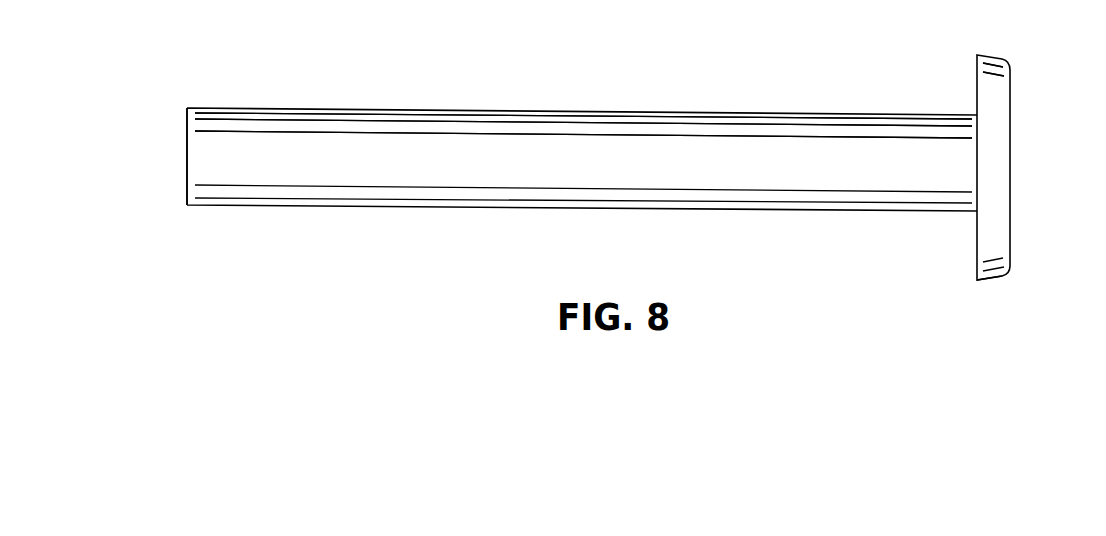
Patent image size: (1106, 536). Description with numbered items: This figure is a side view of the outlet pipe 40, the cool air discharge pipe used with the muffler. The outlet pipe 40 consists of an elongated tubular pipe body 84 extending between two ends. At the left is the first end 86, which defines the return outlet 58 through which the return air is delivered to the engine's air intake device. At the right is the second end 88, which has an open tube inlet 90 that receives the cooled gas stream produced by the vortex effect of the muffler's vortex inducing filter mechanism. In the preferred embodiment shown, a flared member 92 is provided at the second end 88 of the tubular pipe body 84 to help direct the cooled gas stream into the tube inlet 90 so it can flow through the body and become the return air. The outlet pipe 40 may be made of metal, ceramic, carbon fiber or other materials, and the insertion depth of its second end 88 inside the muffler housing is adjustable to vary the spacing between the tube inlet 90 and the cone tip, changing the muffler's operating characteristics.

The outlet pipe 40 is at (590, 198).
The return outlet 58 is at (162, 155).
The tubular pipe body 84 is at (606, 148).
The first end 86 is at (190, 92).
The second end 88 is at (993, 295).
The tube inlet 90 is at (1020, 162).
The flared member 92 is at (997, 98).